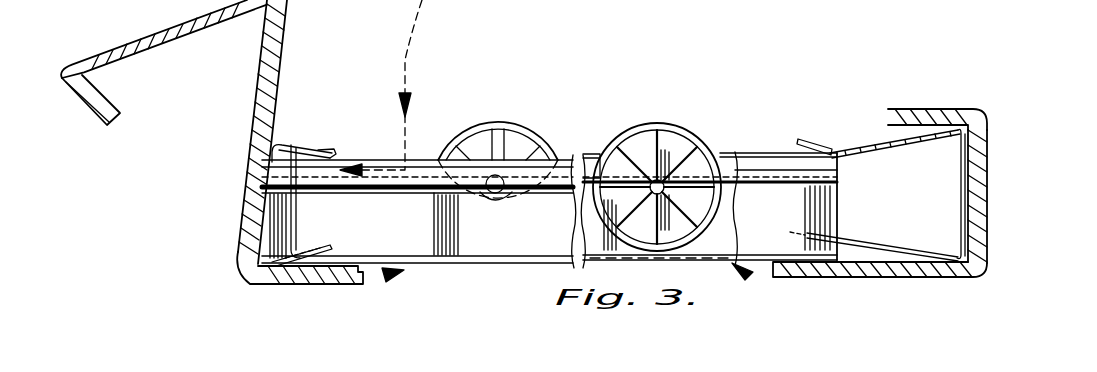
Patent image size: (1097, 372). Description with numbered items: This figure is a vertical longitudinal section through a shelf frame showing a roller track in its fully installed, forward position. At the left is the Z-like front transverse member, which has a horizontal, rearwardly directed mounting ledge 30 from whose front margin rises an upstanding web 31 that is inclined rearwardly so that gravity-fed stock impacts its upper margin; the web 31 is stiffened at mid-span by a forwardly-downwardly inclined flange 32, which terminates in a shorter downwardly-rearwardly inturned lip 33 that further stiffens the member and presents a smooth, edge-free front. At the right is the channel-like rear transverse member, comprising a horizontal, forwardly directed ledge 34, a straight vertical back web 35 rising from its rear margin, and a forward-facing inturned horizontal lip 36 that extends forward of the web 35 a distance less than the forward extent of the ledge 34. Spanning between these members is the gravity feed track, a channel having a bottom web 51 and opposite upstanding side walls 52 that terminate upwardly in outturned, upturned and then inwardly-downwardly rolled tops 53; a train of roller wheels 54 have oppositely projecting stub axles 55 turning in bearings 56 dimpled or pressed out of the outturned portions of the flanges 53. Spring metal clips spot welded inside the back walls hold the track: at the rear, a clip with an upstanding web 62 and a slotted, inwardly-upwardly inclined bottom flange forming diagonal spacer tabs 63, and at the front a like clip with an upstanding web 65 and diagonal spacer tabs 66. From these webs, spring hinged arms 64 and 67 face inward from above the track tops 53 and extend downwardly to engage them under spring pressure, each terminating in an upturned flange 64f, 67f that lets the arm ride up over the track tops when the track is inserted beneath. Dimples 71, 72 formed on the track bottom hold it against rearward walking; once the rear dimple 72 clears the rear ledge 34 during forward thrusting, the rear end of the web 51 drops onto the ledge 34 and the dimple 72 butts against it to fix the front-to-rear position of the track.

The mounting or supporting flange or ledge 30 is at (332, 284).
The upstanding web or back 31 is at (248, 156).
The forwardly-downwardly inclined flange or web 32 is at (160, 42).
The inturned flange or lip 33 is at (92, 108).
The mounting or supporting flange or ledge 34 is at (890, 279).
The upstanding back or web 35 is at (974, 157).
The inturned horizontal flange or lip 36 is at (918, 109).
The base or bottom web portion 51 is at (460, 268).
The upstanding side portions or walls 52 is at (392, 273).
The rolled tops or flanges 53 is at (777, 160).
The rollers or roller wheels 54 is at (640, 124).
The stub shafts or axles 55 is at (650, 189).
The journals or bearings 56 is at (496, 194).
The upstanding back or web portion 62 is at (963, 187).
The inclined fingers or spacer tabs 63 is at (857, 233).
The spring retainer flange or spring hinged arm 64 is at (876, 142).
The upturned flange 64f is at (804, 138).
The upstanding back or web portion 65 is at (286, 200).
The inclined fingers or spacer tabs 66 is at (321, 243).
The spring retainer flange or spring hinged arm 67 is at (290, 142).
The upturned flange 67f is at (326, 146).
The dimple 71 is at (402, 245).
The dimple 72 is at (742, 280).